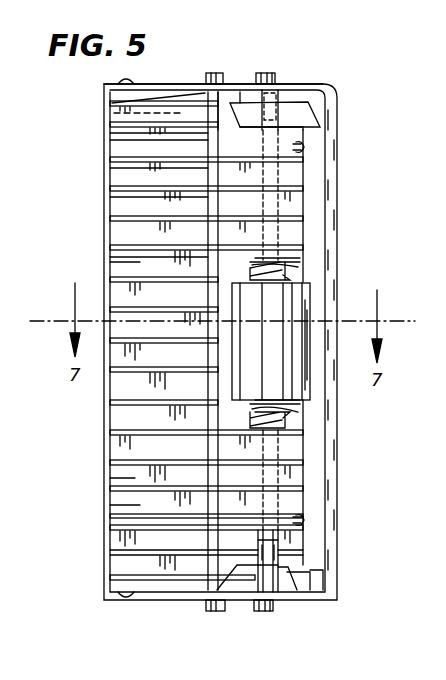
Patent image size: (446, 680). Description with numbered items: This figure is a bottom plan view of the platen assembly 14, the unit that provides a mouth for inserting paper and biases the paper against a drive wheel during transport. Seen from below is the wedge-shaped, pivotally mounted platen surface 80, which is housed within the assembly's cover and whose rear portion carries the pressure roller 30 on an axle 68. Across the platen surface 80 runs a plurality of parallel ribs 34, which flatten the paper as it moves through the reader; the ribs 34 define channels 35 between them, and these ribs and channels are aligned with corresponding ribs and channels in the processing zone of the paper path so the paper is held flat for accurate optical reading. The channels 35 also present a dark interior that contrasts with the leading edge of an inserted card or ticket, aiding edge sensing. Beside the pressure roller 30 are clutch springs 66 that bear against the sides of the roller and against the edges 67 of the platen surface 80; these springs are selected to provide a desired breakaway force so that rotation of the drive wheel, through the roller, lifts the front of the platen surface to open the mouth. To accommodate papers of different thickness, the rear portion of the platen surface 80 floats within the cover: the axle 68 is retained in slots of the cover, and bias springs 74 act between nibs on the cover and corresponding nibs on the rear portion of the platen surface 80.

The platen assembly 14 is at (342, 126).
The pressure roller 30 is at (283, 360).
The parallel ribs 34 is at (114, 152).
The channels 35 is at (130, 477).
The clutch springs 66 is at (290, 275).
The edges 67 is at (300, 262).
The axle 68 is at (278, 558).
The bias springs 74 is at (304, 148).
The platen surface 80 is at (112, 263).